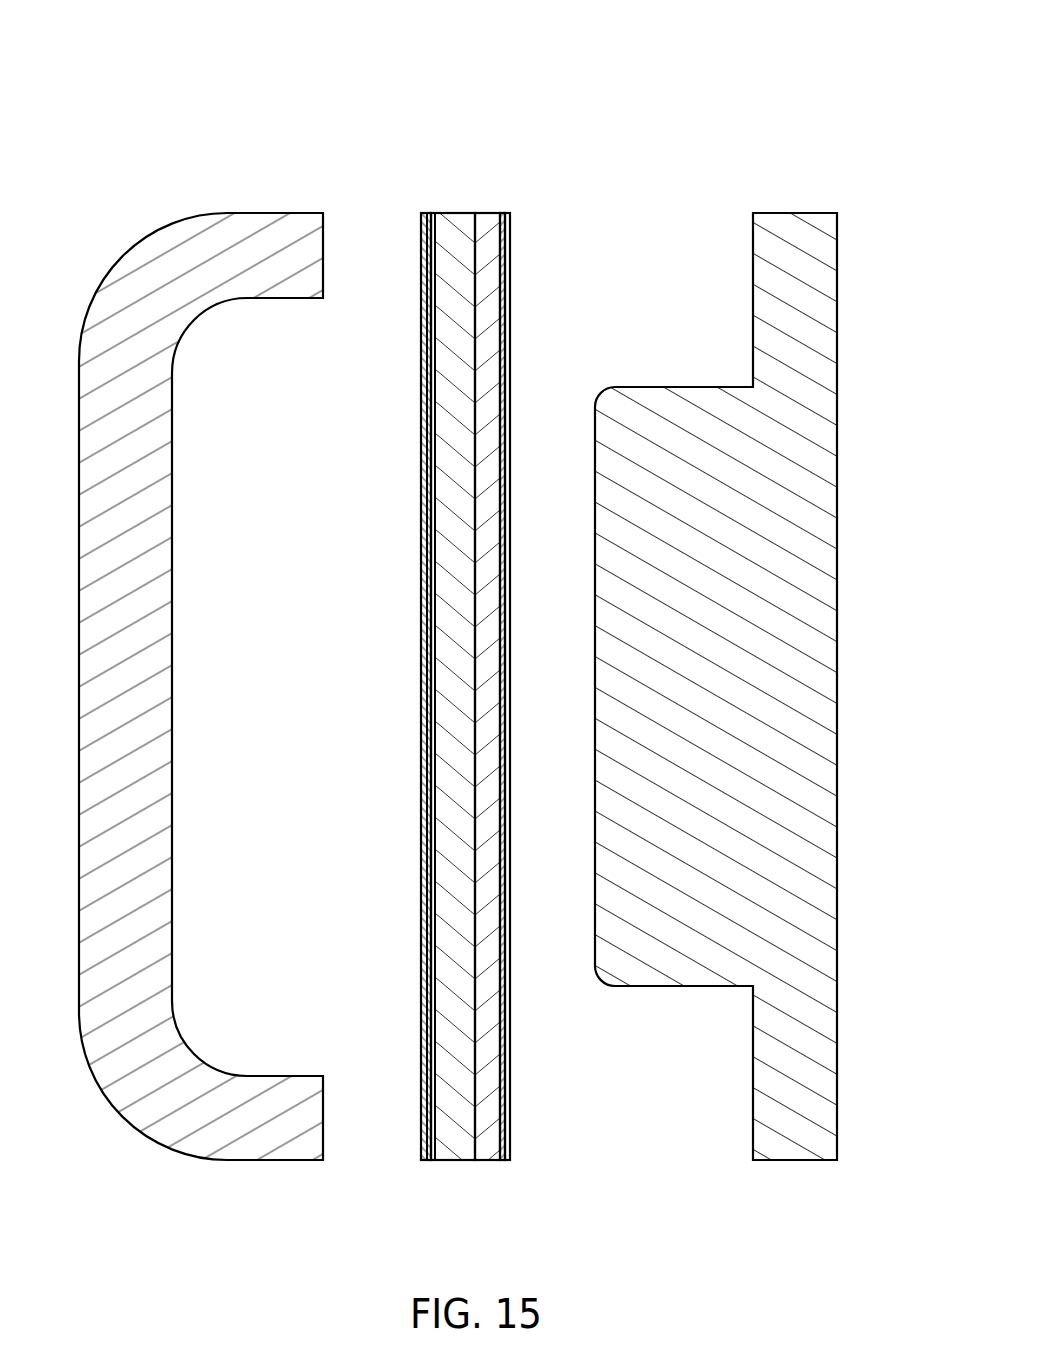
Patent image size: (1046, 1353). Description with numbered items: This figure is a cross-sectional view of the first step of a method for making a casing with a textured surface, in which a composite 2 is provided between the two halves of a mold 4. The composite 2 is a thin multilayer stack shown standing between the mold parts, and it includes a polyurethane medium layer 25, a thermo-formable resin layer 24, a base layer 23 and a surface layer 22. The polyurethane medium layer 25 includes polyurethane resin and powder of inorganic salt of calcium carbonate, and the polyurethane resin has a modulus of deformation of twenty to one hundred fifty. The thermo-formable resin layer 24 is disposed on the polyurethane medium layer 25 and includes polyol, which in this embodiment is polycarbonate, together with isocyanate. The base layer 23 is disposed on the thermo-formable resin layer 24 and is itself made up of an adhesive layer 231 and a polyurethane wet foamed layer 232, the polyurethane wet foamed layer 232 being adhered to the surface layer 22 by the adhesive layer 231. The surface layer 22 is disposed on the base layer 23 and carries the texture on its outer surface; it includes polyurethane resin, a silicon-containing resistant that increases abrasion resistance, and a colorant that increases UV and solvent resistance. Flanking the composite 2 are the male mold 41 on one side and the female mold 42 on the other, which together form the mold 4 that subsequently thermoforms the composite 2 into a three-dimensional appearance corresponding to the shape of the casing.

The composite 2 is at (526, 612).
The mold 4 is at (756, 598).
The surface layer 22 is at (424, 212).
The base layer 23 is at (456, 612).
The adhesive layer 231 is at (430, 212).
The polyurethane wet foamed layer 232 is at (455, 223).
The thermo-formable resin layer 24 is at (493, 223).
The polyurethane medium layer 25 is at (508, 220).
The male mold 41 is at (278, 238).
The female mold 42 is at (792, 230).